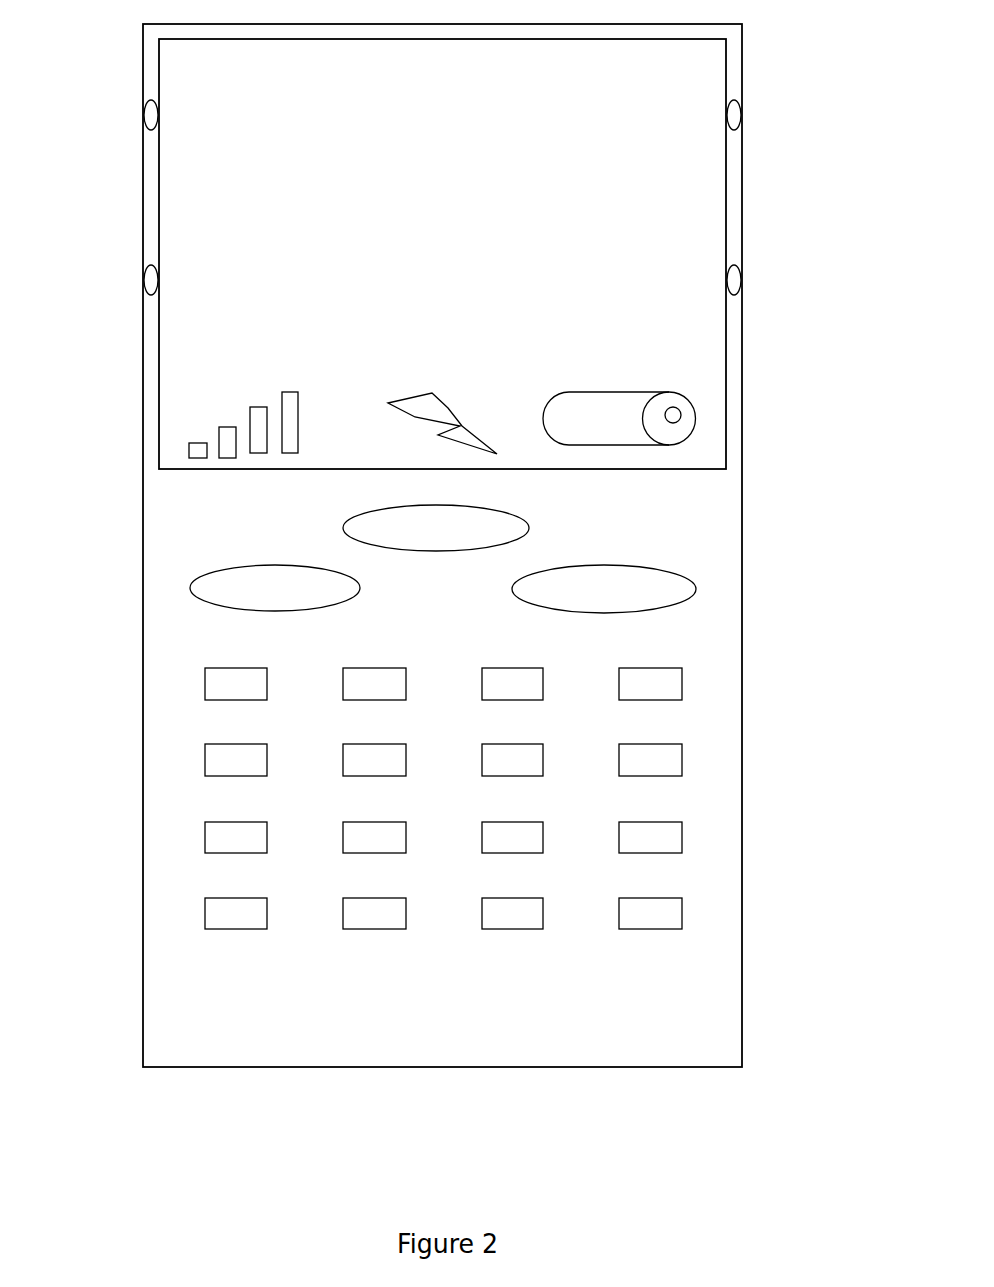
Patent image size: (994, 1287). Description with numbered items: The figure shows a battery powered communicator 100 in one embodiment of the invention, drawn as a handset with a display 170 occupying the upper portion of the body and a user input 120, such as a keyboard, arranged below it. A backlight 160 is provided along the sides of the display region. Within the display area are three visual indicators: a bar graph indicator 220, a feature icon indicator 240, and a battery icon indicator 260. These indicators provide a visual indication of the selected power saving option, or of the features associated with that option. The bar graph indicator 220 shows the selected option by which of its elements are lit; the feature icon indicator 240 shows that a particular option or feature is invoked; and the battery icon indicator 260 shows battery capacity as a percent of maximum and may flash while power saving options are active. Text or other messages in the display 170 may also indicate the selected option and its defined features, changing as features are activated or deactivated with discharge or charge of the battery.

The battery powered communicator 100 is at (143, 515).
The user input 120 is at (690, 606).
The backlight 160 is at (743, 275).
The display 170 is at (330, 181).
The bar graph indicator 220 is at (240, 407).
The feature icon indicator 240 is at (448, 390).
The battery icon indicator 260 is at (697, 400).